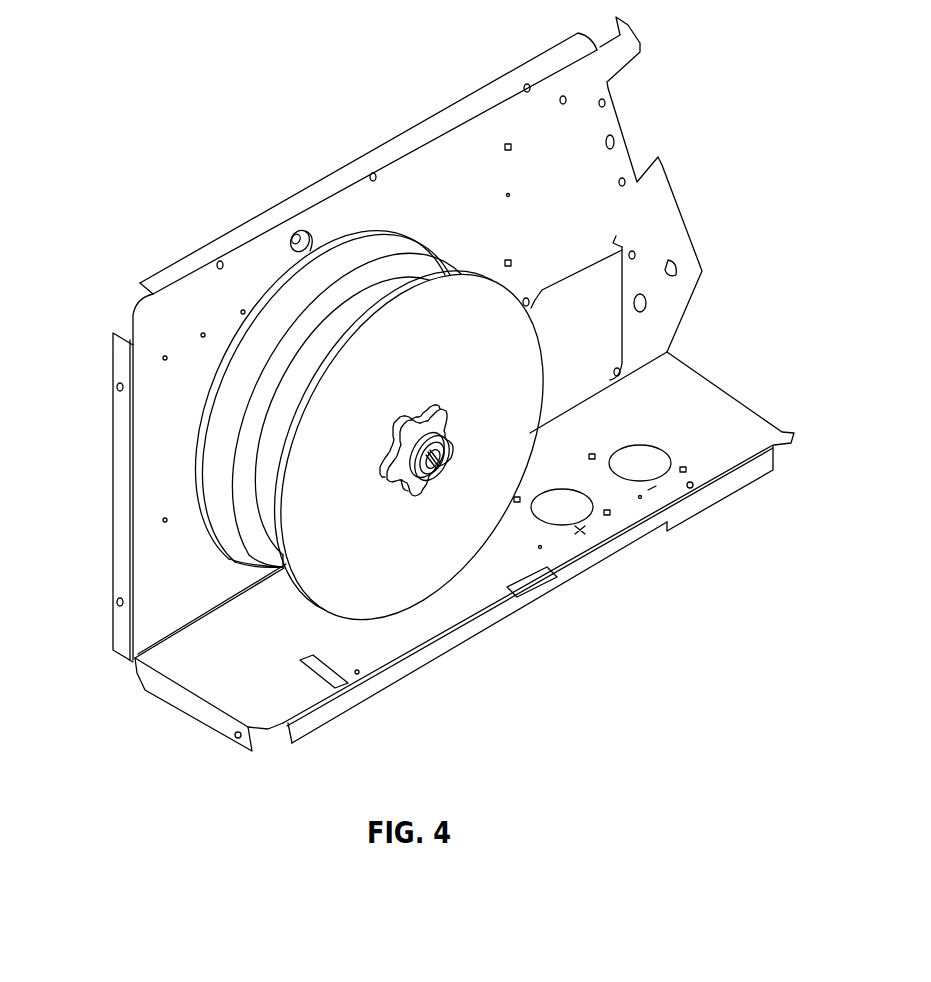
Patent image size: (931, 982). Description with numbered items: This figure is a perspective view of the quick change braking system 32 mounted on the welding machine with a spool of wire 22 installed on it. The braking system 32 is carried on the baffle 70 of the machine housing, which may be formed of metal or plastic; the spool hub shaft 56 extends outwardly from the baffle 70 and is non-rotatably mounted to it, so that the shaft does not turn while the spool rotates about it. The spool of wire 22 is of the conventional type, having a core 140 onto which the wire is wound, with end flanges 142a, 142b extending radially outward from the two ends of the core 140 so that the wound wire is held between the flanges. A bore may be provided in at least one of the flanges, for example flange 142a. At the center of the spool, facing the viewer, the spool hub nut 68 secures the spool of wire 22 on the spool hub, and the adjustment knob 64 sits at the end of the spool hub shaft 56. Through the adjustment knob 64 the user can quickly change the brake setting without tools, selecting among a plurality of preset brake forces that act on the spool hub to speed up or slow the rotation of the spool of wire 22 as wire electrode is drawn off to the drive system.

The baffle 70 is at (510, 106).
The spool of wire 22 is at (321, 367).
The end flange 142a is at (263, 318).
The end flange 142b is at (465, 303).
The core 140 is at (267, 443).
The quick change braking system 32 is at (530, 345).
The spool hub nut 68 is at (407, 496).
The adjustment knob 64 is at (437, 441).
The spool hub shaft 56 is at (462, 470).